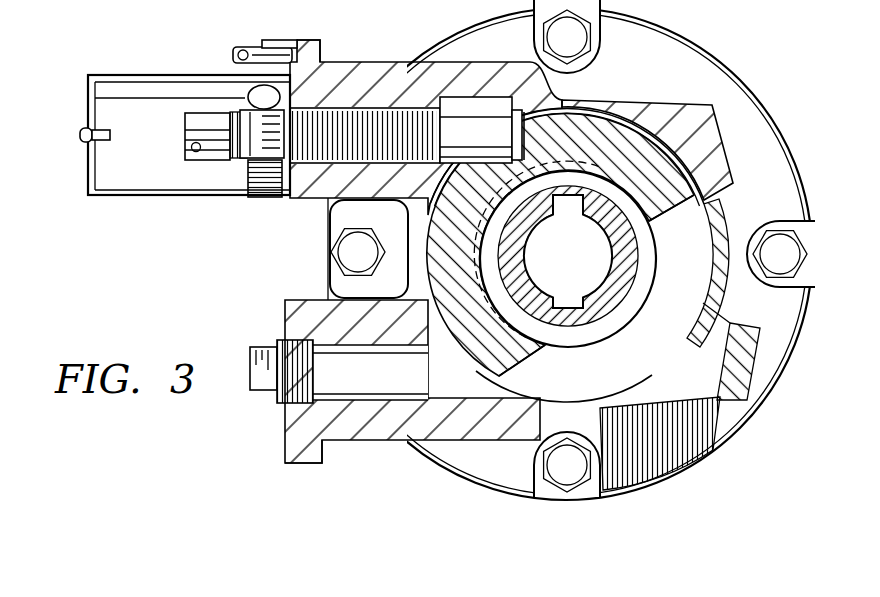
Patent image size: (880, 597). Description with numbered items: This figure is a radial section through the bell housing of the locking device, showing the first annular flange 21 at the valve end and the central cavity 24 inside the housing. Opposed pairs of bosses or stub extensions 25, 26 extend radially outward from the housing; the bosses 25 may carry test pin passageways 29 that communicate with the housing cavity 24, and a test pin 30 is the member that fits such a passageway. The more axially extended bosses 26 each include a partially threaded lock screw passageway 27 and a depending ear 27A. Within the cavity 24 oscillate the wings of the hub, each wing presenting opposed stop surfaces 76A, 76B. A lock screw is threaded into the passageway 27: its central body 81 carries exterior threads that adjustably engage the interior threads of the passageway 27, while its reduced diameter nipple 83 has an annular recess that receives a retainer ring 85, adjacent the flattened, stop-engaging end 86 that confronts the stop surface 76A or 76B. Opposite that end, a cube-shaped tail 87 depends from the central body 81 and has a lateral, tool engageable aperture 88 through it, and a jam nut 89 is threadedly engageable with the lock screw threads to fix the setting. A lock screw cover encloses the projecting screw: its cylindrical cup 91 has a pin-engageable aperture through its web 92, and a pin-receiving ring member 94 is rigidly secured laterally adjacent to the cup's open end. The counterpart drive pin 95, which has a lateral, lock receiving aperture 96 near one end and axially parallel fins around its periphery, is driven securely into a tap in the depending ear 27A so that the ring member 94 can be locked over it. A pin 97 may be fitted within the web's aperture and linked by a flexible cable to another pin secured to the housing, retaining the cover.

The first annular flange 21 is at (768, 147).
The central cavity 24 is at (700, 303).
The bosses 25 is at (720, 104).
The bosses 26 is at (385, 100).
The lock screw passageway 27 is at (400, 104).
The depending ear 27A is at (320, 50).
The test pin passageway 29 is at (710, 437).
The test pin 30 is at (566, 247).
The stop surface 76A is at (458, 214).
The stop surface 76B is at (718, 204).
The central body 81 is at (333, 165).
The reduced diameter nipple 83 is at (470, 122).
The retainer ring 85 is at (520, 112).
The stop-engaging end 86 is at (563, 100).
The cube-shaped tail 87 is at (200, 112).
The tool engageable aperture 88 is at (190, 157).
The jam nut 89 is at (262, 150).
The cylindrical cup 91 is at (125, 72).
The web 92 is at (90, 90).
The ring member 94 is at (267, 45).
The drive pin 95 is at (257, 52).
The lock receiving aperture 96 is at (240, 52).
The pin 97 is at (80, 135).